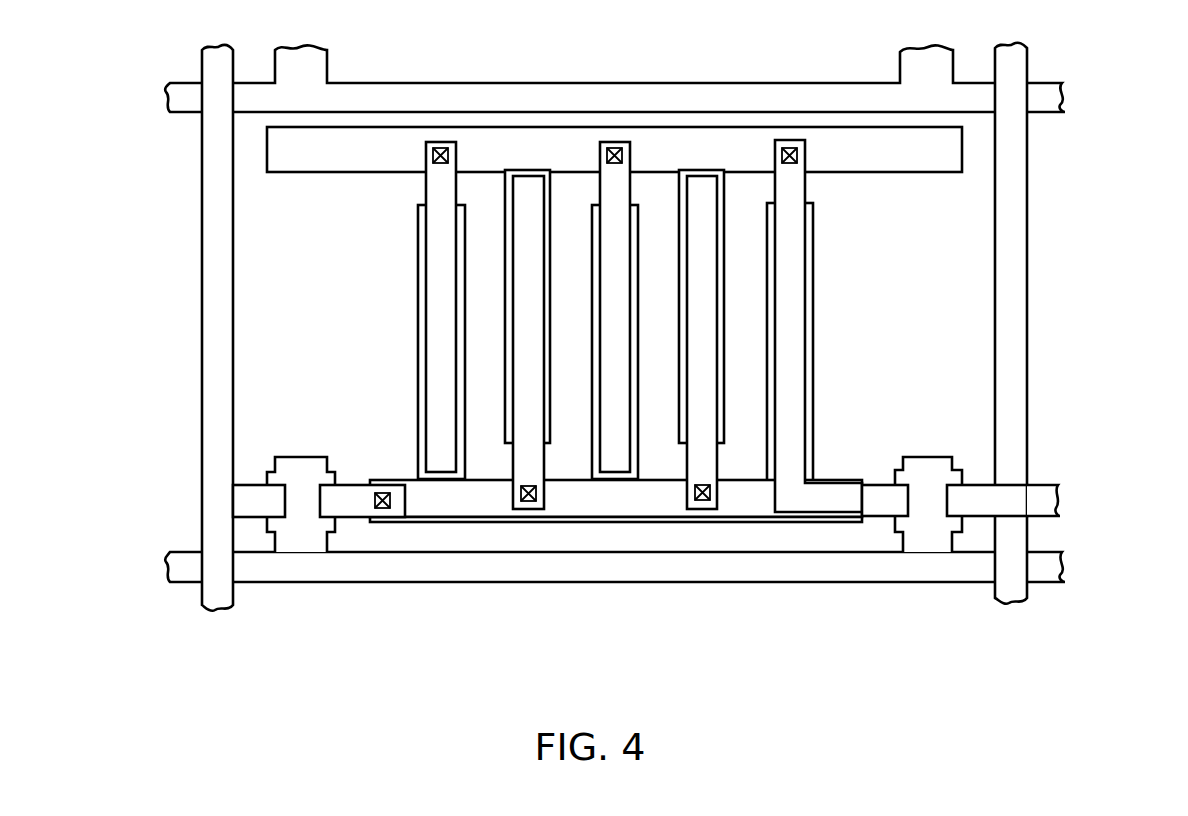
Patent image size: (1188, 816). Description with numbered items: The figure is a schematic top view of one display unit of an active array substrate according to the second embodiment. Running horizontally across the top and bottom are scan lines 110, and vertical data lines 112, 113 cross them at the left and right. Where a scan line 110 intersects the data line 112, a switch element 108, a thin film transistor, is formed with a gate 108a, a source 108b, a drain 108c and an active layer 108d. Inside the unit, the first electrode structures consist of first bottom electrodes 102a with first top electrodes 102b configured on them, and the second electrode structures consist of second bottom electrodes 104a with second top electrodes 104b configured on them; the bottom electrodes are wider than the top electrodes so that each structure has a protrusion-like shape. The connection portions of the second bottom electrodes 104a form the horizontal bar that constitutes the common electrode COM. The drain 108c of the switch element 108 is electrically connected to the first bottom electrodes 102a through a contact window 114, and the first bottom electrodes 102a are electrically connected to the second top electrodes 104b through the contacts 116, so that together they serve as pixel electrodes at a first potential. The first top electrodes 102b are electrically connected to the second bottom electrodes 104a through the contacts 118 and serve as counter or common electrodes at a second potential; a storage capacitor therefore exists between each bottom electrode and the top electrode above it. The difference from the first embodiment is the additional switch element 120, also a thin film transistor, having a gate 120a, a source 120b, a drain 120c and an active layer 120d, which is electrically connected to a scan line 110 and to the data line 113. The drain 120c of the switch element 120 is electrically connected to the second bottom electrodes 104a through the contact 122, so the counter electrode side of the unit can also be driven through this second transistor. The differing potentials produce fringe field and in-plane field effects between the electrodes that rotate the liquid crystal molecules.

The common electrode COM is at (305, 155).
The first bottom electrode 102a is at (422, 230).
The first top electrode 102b is at (437, 273).
The second bottom electrode 104a is at (808, 230).
The second top electrode 104b is at (793, 273).
The switch element 108 is at (224, 431).
The gate 108a is at (353, 498).
The source 108b is at (255, 500).
The drain 108c is at (290, 463).
The active layer 108d is at (313, 478).
The scan line 110 is at (528, 100).
The data line 112 is at (222, 528).
The data line 113 is at (1010, 167).
The contact window 114 is at (382, 510).
The contact 116 is at (527, 510).
The contact 118 is at (443, 145).
The switch element 120 is at (1022, 431).
The gate 120a is at (877, 497).
The source 120b is at (1034, 476).
The drain 120c is at (940, 465).
The active layer 120d is at (917, 478).
The contact 122 is at (793, 143).